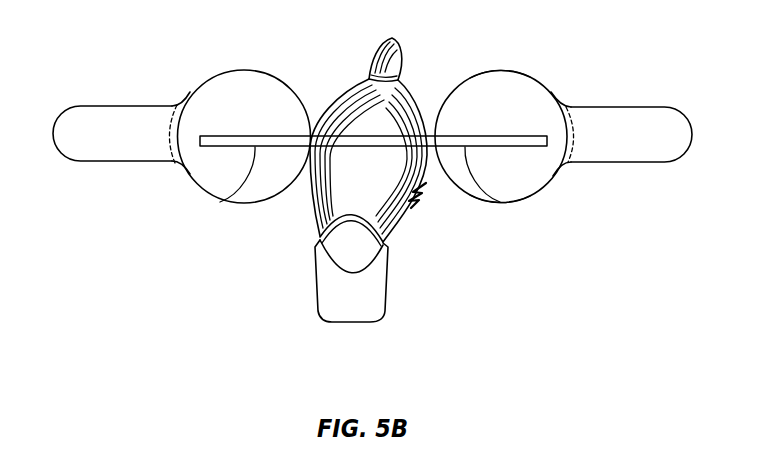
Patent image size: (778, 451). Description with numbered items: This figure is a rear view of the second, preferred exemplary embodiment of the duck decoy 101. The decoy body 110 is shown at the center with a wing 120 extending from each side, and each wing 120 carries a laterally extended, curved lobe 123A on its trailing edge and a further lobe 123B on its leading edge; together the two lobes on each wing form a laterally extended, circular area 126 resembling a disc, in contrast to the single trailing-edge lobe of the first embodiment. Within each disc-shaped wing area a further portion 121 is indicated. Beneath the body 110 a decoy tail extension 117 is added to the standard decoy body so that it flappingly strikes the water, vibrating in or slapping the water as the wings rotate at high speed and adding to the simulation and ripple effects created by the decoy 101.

The duck decoy 101 is at (453, 35).
The decoy body 110 is at (361, 80).
The decoy tail extension 117 is at (337, 322).
The wing 120 is at (216, 99).
The inner ring of ear piece 121 is at (220, 202).
The lobe 123A is at (502, 69).
The lobe 123B is at (483, 203).
The label on ear piece 126 is at (273, 127).